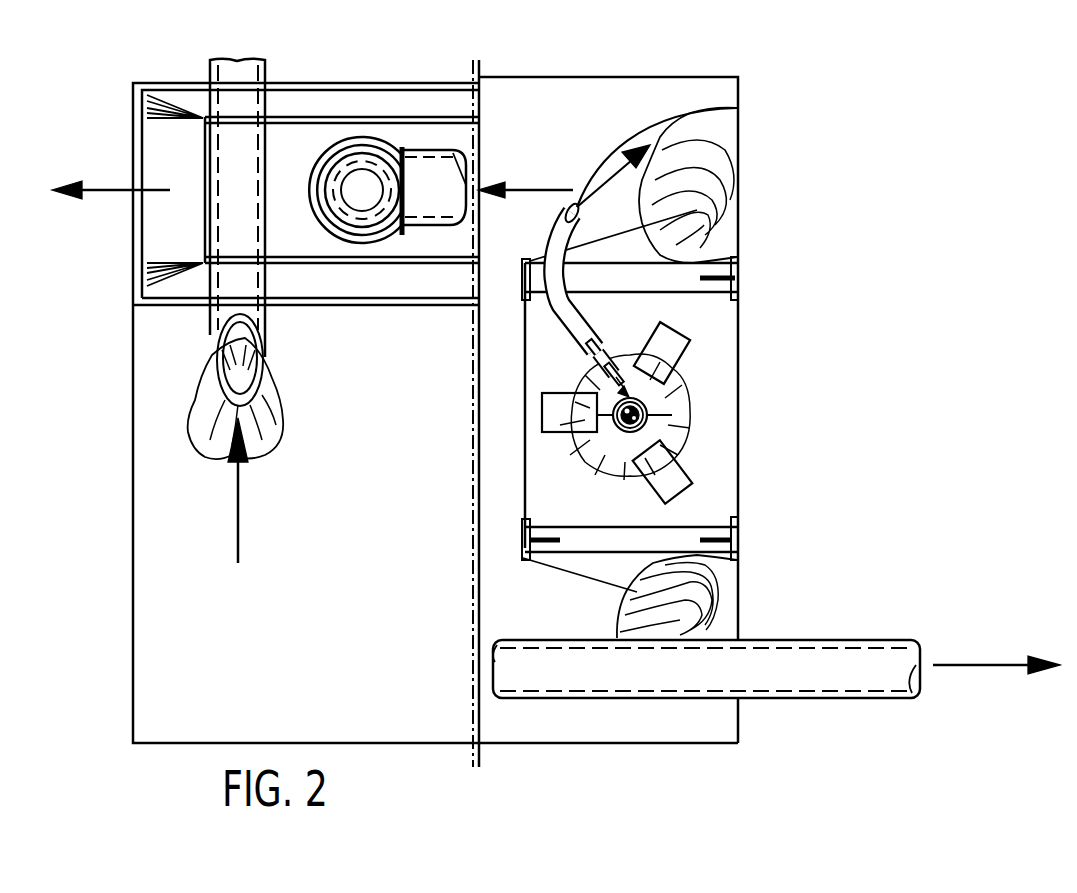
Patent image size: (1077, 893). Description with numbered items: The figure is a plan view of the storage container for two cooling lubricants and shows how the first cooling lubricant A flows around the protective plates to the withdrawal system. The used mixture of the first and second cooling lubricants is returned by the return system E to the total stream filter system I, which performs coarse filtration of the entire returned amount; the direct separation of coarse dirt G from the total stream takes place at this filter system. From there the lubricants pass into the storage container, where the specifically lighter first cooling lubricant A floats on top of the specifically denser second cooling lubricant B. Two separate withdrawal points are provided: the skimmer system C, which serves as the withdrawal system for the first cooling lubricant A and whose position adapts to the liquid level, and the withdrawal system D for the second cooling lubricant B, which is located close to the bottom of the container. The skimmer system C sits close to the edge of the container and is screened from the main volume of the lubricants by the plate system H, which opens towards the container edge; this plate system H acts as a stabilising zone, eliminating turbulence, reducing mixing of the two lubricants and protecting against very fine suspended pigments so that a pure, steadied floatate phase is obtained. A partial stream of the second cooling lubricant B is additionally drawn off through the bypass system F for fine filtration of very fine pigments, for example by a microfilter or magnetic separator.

The first cooling lubricant A is at (680, 388).
The second cooling lubricant B is at (435, 413).
The skimmer system C is at (737, 87).
The withdrawal system for second cooling lubricant D is at (776, 626).
The return system E is at (608, 410).
The bypass system F is at (266, 311).
The direct separation of coarse dirt G is at (111, 171).
The plate system H is at (497, 413).
The total stream filter system I is at (369, 190).